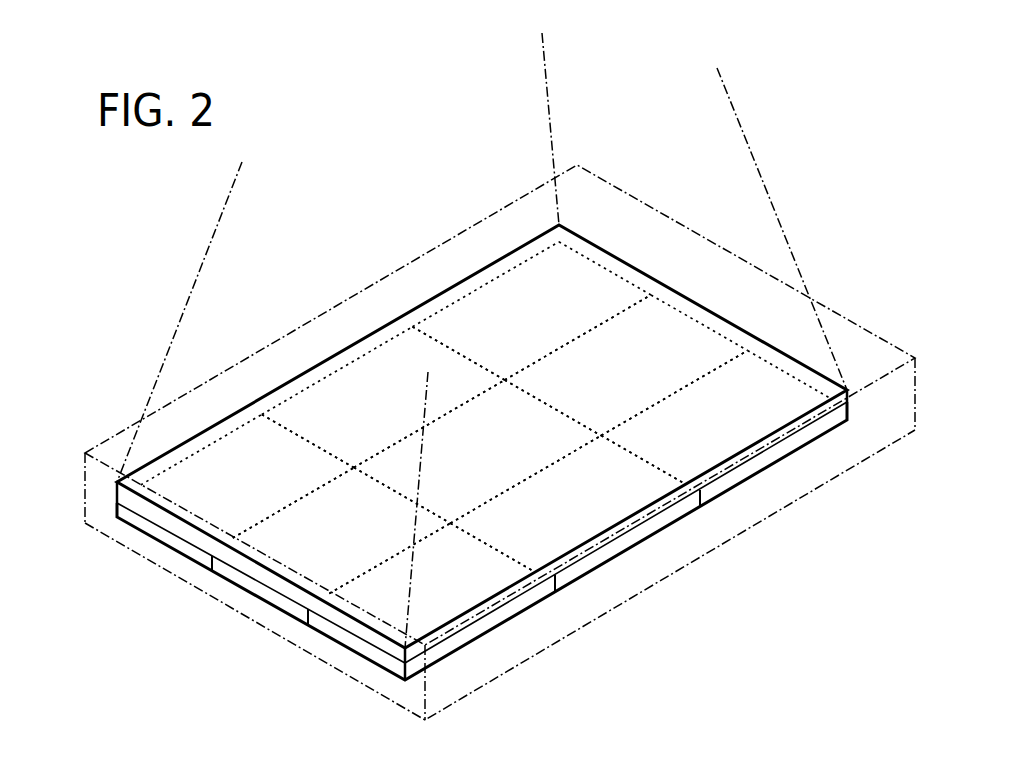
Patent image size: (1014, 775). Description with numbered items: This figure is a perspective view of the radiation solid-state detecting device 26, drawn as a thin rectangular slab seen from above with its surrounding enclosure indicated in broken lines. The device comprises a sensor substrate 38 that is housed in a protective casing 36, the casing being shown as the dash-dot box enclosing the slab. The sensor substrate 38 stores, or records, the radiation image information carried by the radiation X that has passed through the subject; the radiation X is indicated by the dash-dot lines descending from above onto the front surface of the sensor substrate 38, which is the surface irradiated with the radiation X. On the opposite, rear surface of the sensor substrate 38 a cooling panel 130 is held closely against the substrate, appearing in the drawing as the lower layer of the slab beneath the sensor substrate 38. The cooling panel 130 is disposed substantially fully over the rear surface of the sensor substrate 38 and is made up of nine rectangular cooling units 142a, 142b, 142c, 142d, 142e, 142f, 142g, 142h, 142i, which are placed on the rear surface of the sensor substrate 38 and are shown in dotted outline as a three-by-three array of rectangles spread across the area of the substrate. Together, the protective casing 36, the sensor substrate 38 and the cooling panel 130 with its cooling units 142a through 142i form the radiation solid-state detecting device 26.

The radiation X is at (208, 250).
The radiation solid-state detecting device 26 is at (829, 297).
The protective casing 36 is at (190, 583).
The sensor substrate 38 is at (115, 495).
The cooling panel 130 is at (115, 511).
The cooling unit 142a is at (235, 503).
The cooling unit 142b is at (330, 560).
The cooling unit 142c is at (448, 600).
The cooling unit 142d is at (382, 416).
The cooling unit 142e is at (482, 472).
The cooling unit 142f is at (578, 527).
The cooling unit 142g is at (533, 330).
The cooling unit 142h is at (628, 386).
The cooling unit 142i is at (728, 432).